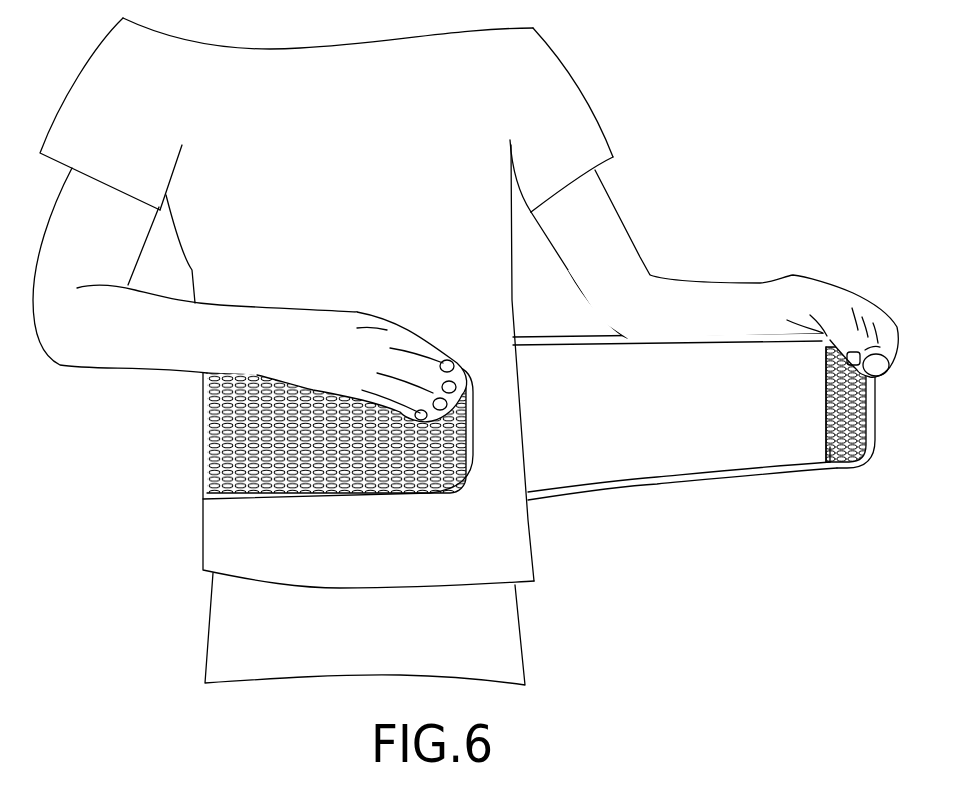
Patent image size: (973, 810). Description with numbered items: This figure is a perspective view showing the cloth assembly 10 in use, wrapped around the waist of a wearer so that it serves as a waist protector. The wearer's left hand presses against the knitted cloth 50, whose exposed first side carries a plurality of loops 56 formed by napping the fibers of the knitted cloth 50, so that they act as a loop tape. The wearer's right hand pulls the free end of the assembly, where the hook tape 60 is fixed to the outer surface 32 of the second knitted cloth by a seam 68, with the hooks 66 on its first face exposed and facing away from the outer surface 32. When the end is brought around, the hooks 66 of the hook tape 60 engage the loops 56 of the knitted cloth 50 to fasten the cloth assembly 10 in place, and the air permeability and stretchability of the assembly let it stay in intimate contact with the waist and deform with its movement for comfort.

The cloth assembly 10 is at (726, 484).
The outer surface 32 is at (656, 458).
The knitted cloth 50 is at (300, 432).
The loops 56 is at (213, 440).
The hook tape 60 is at (858, 397).
The hooks 66 is at (855, 445).
The seam 68 is at (830, 447).